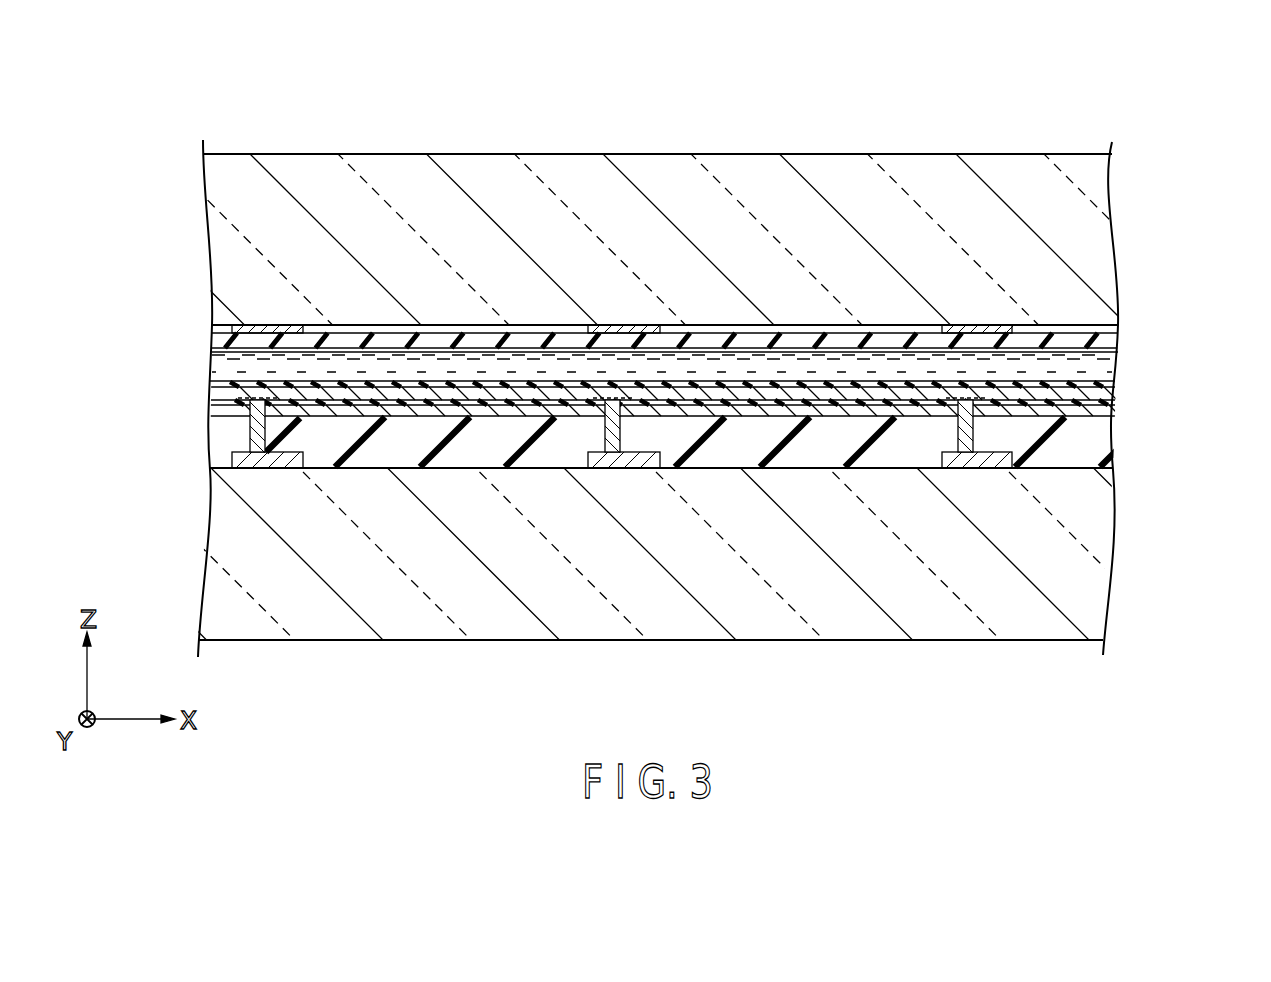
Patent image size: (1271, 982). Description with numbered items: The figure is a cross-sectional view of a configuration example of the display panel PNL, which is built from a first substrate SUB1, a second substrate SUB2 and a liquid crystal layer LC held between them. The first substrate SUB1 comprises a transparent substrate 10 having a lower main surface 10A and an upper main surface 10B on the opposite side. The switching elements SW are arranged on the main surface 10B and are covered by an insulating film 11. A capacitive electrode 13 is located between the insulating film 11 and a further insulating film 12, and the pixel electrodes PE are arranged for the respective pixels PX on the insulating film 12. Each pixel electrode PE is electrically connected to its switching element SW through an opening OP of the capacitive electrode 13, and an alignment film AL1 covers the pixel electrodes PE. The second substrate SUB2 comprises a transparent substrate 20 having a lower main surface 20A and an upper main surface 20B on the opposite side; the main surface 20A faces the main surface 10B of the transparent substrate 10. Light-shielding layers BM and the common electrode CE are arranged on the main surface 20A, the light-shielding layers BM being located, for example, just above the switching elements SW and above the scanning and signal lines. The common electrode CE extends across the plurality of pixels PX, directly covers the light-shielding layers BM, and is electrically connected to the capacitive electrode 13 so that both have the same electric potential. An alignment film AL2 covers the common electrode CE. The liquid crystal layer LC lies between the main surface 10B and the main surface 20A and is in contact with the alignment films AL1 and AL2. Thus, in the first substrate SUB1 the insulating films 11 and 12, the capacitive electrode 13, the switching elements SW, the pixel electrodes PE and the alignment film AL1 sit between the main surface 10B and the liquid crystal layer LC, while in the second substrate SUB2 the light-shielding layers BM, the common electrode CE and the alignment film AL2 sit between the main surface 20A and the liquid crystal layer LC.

The display panel PNL is at (1096, 143).
The first substrate SUB1 is at (1140, 527).
The second substrate SUB2 is at (1140, 258).
The transparent substrate 10 is at (222, 580).
The main surface 10A is at (879, 655).
The main surface 10B is at (796, 460).
The insulating film 11 is at (222, 453).
The insulating film 12 is at (218, 389).
The capacitive electrode 13 is at (218, 407).
The switching element SW is at (238, 470).
The opening OP is at (249, 426).
The pixel electrode PE is at (437, 385).
The alignment film AL1 is at (213, 379).
The liquid crystal layer LC is at (1100, 371).
The alignment film AL2 is at (1100, 345).
The common electrode CE is at (1118, 328).
The light-shielding layer BM is at (267, 325).
The transparent substrate 20 is at (222, 296).
The main surface 20A is at (842, 338).
The main surface 20B is at (893, 143).
The pixel PX is at (449, 449).